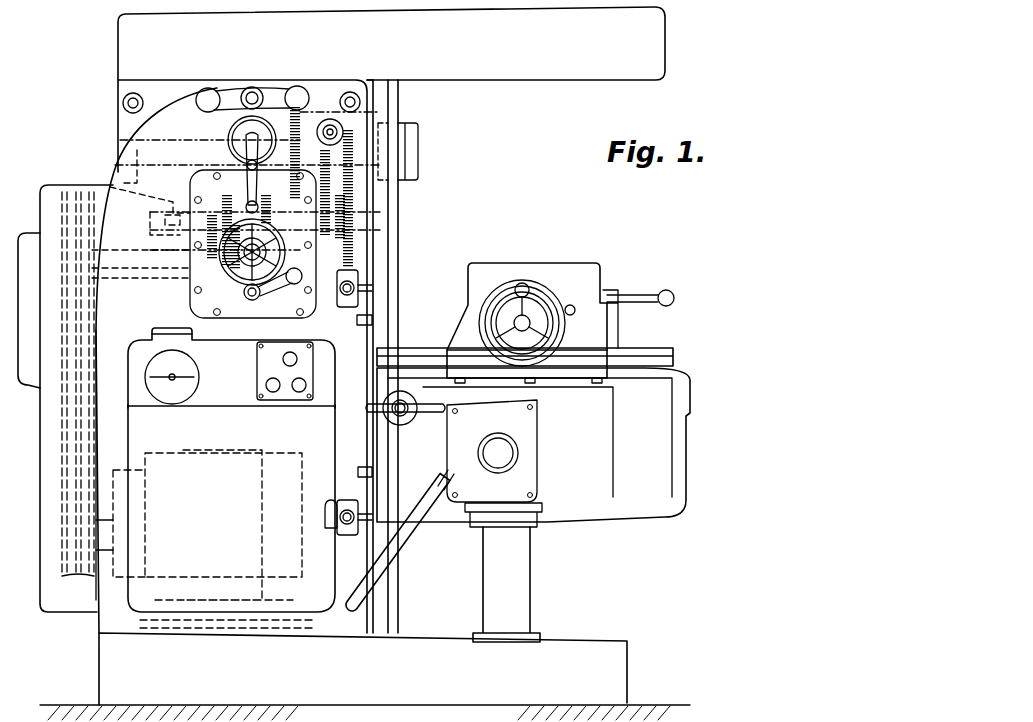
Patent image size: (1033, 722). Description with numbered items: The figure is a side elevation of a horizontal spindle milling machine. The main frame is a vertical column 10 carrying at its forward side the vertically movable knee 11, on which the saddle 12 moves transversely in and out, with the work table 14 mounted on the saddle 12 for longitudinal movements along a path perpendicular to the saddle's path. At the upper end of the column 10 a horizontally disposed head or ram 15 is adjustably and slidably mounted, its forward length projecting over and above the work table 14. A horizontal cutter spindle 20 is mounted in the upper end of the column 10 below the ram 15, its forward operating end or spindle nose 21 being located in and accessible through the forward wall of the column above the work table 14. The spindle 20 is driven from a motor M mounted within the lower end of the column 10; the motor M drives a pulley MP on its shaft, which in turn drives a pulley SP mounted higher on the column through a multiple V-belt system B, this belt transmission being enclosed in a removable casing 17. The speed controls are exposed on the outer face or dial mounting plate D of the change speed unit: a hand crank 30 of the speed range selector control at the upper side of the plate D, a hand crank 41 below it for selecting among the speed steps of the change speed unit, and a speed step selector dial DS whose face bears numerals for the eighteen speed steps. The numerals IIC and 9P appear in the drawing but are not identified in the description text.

The ram 15 is at (658, 42).
The column 10 is at (229, 356).
The casing 17 is at (40, 405).
The belt system B is at (62, 468).
The pulley SP is at (94, 323).
The motor M is at (224, 455).
The motor control IIC is at (107, 540).
The pulley MP is at (100, 560).
The pulley 9P is at (68, 568).
The speed step selector dial DS is at (242, 264).
The hand crank 41 is at (272, 290).
The dial mounting plate D is at (309, 306).
The spindle 20 is at (163, 152).
The hand crank 30 is at (264, 178).
The spindle nose 21 is at (425, 131).
The work table 14 is at (585, 270).
The saddle 12 is at (588, 356).
The knee 11 is at (656, 482).